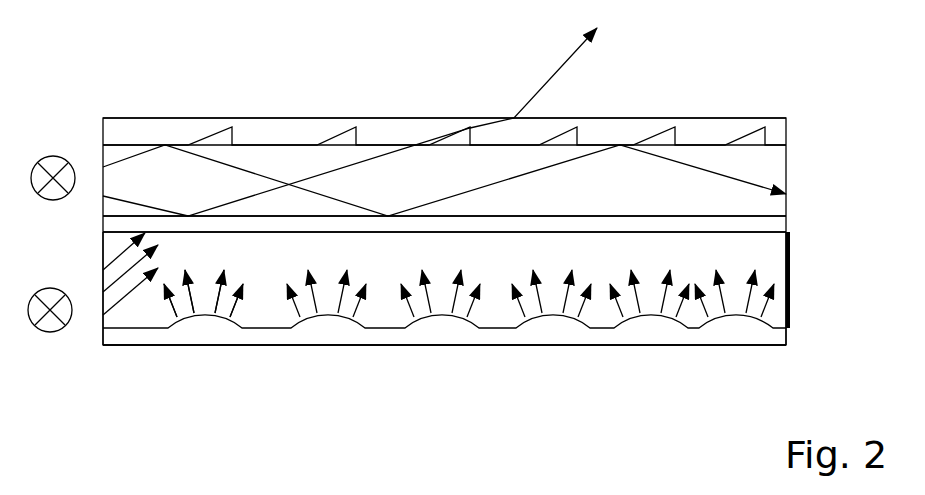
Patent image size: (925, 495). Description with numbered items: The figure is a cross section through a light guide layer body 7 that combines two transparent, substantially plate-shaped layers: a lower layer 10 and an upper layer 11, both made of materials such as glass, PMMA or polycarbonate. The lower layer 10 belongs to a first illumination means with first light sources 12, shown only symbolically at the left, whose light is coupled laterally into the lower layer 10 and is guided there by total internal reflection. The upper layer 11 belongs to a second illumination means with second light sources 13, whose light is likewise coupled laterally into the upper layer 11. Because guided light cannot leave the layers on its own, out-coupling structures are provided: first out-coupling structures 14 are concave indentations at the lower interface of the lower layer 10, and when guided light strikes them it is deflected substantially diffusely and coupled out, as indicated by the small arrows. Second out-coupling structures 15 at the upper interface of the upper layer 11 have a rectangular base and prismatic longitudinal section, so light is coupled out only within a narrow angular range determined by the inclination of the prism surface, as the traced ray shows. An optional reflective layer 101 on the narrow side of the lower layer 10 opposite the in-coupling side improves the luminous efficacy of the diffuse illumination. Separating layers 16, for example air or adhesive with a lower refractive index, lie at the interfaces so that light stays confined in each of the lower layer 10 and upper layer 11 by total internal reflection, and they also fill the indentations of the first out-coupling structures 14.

The light guide layer body 7 is at (163, 102).
The lower layer 10 is at (777, 258).
The reflective layer 101 is at (790, 303).
The upper layer 11 is at (778, 157).
The first light sources 12 is at (50, 333).
The second light sources 13 is at (50, 157).
The first out-coupling structures 14 is at (323, 323).
The second out-coupling structures 15 is at (693, 138).
The separating layers 16 is at (777, 129).